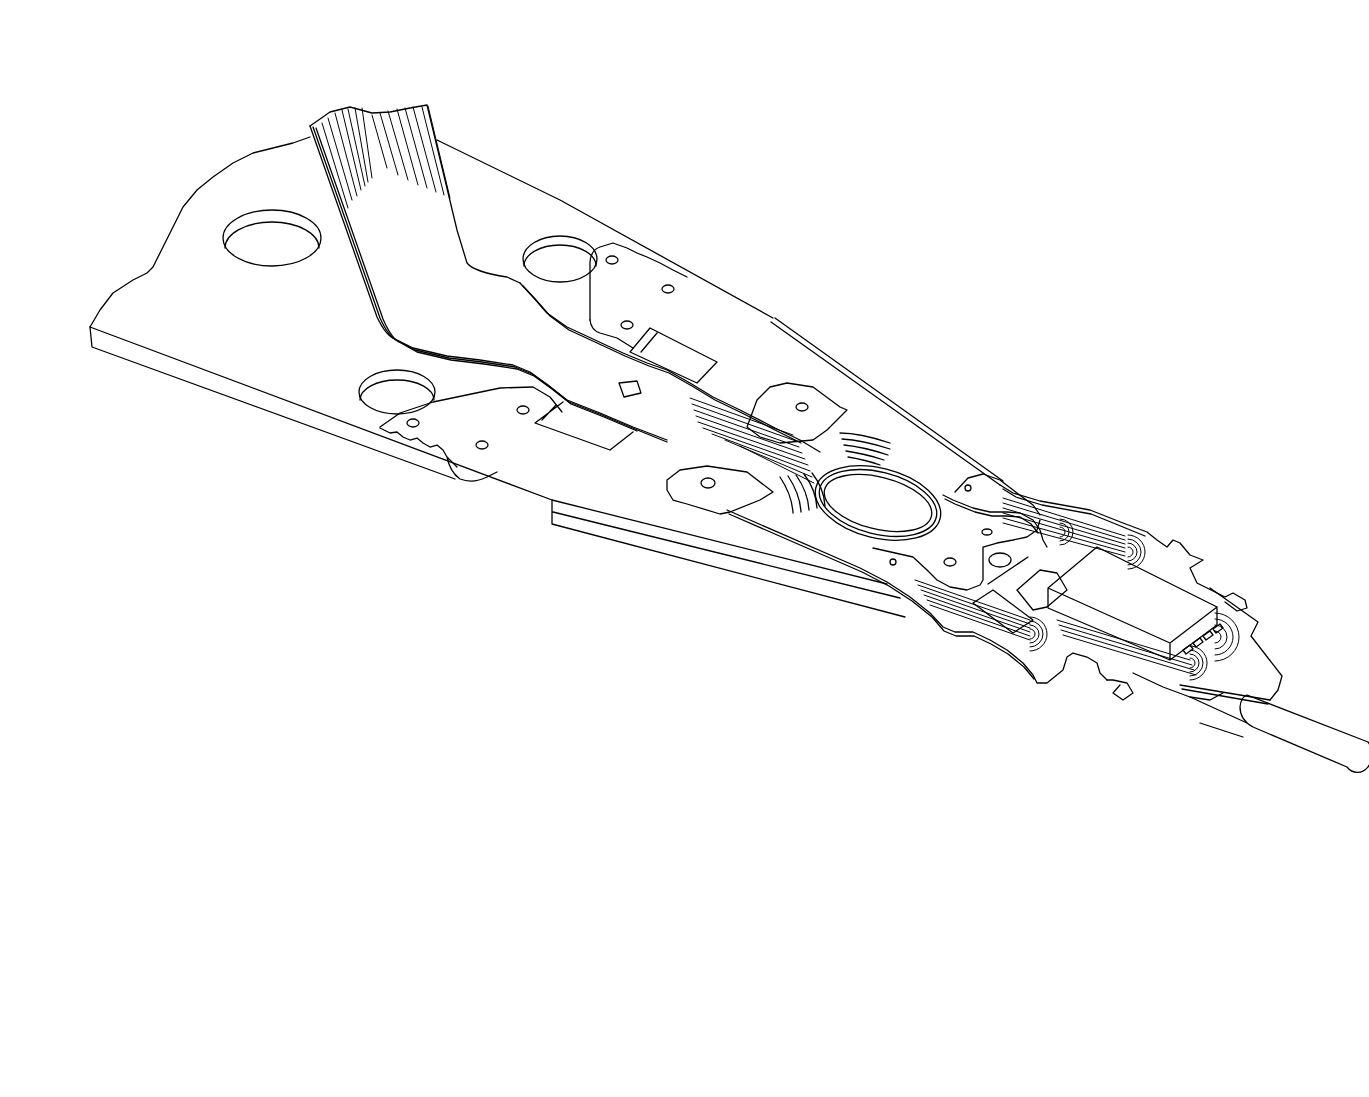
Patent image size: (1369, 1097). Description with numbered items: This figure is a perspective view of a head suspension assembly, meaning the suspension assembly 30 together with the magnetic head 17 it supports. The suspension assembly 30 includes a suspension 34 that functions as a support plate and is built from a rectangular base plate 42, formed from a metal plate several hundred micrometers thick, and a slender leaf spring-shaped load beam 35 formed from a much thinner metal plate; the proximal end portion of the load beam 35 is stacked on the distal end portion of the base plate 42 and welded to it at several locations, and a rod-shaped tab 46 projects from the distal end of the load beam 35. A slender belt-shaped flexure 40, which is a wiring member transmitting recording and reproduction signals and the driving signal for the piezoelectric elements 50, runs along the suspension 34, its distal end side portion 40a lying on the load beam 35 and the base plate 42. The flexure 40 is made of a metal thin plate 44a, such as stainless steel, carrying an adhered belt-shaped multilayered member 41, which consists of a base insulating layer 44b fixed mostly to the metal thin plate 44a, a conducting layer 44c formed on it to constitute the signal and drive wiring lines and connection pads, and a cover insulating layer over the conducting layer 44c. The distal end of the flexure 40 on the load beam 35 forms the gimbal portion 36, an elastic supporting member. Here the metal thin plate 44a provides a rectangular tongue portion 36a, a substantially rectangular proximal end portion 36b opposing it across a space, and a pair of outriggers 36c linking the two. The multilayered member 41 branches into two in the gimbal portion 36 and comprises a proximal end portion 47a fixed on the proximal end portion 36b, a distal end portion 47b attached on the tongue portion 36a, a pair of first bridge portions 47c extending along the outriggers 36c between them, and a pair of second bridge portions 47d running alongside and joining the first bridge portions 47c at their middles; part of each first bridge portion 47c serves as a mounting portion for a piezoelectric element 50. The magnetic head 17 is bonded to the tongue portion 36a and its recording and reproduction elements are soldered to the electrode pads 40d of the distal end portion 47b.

The magnetic head 17 is at (1173, 607).
The suspension assembly 30 is at (940, 356).
The suspension 34 is at (368, 477).
The load beam 35 is at (607, 493).
The gimbal portion 36 is at (1157, 763).
The tongue portion 36a is at (1107, 677).
The proximal end portion 36b is at (953, 540).
The outriggers 36c is at (1135, 527).
The flexure 40 is at (444, 259).
The distal end side portion 40a is at (790, 445).
The electrode pads 40d is at (660, 385).
The multilayered member 41 is at (865, 443).
The base plate 42 is at (268, 370).
The metal thin plate 44a is at (707, 500).
The base insulating layer 44b is at (793, 513).
The conducting layer 44c is at (403, 152).
The tab 46 is at (1312, 727).
The proximal end portion 47a is at (993, 500).
The distal end portion 47b is at (1240, 652).
The first bridge portions 47c is at (1052, 520).
The second bridge portions 47d is at (1110, 537).
The piezoelectric elements 50 is at (1080, 543).